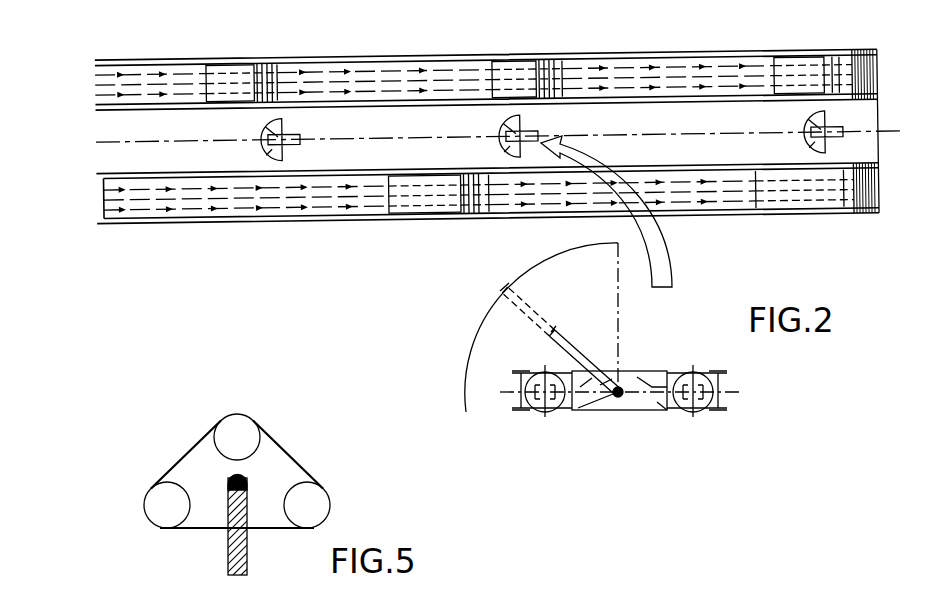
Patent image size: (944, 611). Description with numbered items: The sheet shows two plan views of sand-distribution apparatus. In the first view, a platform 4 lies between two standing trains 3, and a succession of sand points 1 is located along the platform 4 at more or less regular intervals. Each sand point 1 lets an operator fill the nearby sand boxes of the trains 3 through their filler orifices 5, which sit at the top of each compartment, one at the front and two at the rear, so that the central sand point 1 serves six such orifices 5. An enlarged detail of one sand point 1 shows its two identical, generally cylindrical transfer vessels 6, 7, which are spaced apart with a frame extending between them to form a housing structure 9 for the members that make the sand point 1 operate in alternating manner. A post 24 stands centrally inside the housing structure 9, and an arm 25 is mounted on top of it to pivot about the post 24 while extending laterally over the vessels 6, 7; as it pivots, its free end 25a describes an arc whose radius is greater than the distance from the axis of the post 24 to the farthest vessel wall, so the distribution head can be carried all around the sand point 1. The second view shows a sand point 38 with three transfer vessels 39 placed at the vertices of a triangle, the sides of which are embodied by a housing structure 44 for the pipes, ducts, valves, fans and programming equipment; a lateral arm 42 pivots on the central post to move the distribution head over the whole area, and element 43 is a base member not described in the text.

In FIG. 2, the sand point 1 is at (292, 134).
In FIG. 2, the train 3 is at (648, 54).
In FIG. 2, the platform 4 is at (696, 131).
In FIG. 2, the filler orifice 5 is at (523, 69).
In FIG. 2, the transfer vessel 6 is at (542, 407).
In FIG. 2, the transfer vessel 7 is at (697, 407).
In FIG. 2, the housing structure 9 is at (630, 367).
In FIG. 2, the post 24 is at (620, 397).
In FIG. 2, the arm 25 is at (572, 322).
In FIG. 2, the free end 25a is at (503, 291).
In FIG. 5, the sand point 38 is at (306, 444).
In FIG. 5, the transfer vessel 39 is at (247, 425).
In FIG. 5, the lateral arm 42 is at (227, 538).
In FIG. 5, the base plate 43 is at (270, 530).
In FIG. 5, the housing structure 44 is at (183, 447).